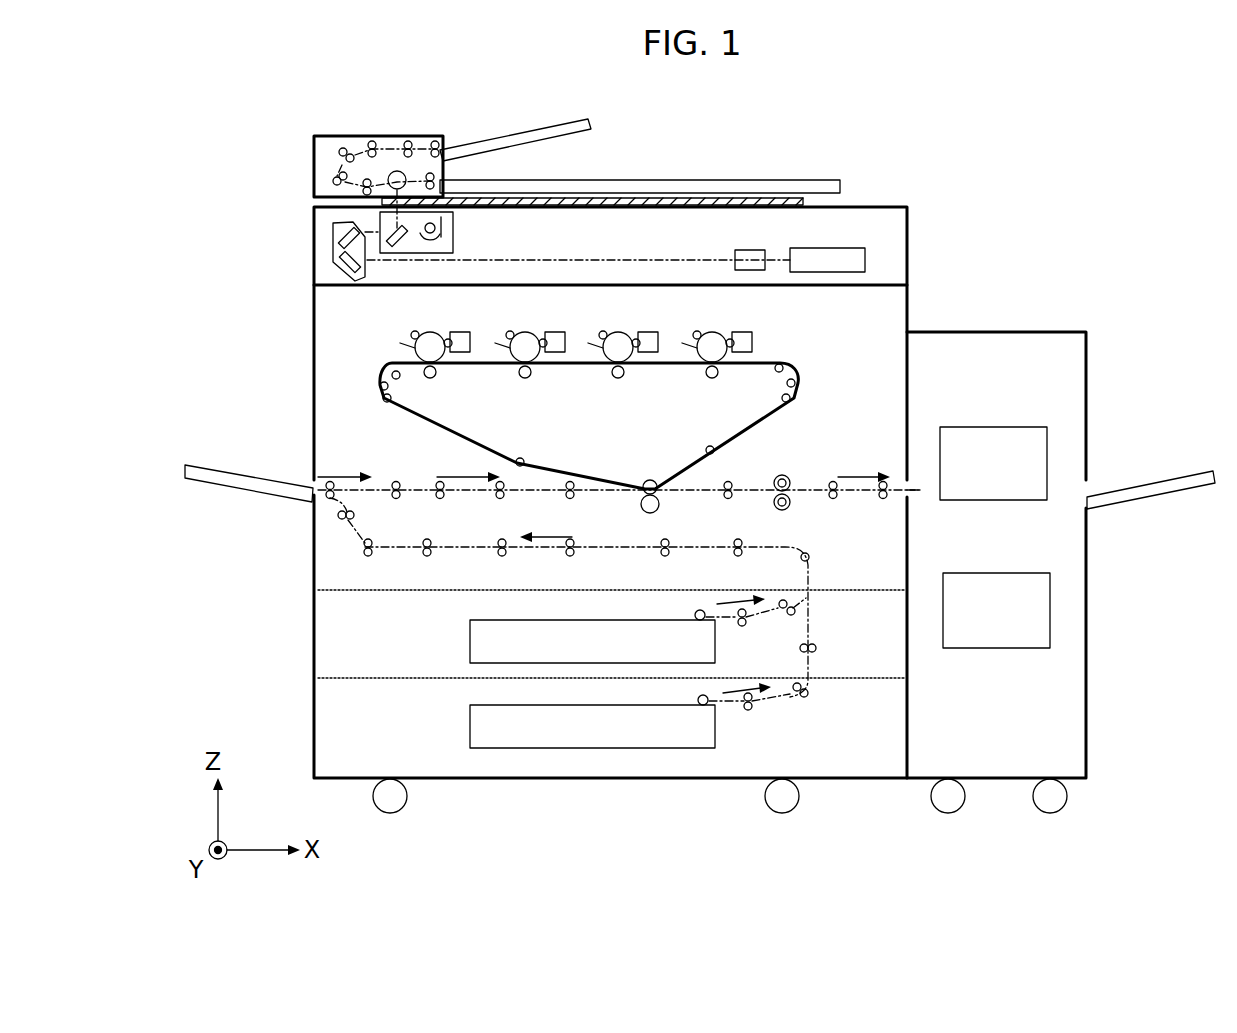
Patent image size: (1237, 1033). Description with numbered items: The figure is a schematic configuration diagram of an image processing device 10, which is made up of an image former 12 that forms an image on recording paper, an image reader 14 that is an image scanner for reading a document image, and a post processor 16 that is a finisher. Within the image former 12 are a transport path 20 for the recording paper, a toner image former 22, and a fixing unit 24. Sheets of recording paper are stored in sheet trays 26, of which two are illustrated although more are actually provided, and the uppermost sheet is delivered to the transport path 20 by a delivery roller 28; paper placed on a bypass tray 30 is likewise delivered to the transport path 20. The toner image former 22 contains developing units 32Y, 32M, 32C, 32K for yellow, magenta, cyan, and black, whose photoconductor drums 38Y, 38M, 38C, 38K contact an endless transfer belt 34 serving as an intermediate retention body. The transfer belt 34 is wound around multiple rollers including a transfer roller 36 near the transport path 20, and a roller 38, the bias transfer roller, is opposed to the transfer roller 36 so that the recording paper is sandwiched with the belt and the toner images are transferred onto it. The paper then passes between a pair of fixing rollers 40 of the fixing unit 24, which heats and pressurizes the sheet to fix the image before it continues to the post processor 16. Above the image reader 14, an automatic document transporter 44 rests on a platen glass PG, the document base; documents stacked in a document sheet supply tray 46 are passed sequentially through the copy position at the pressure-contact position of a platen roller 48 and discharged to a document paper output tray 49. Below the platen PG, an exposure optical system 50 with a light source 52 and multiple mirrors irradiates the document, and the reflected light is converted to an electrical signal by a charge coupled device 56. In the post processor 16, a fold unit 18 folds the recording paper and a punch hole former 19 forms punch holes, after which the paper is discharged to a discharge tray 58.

The image processing device 10 is at (1000, 199).
The image former 12 is at (884, 306).
The image reader 14 is at (885, 224).
The post processor 16 is at (974, 354).
The fold unit 18 is at (975, 427).
The punch hole former 19 is at (975, 573).
The transport path 20 is at (345, 525).
The toner image former 22 is at (345, 358).
The fixing unit 24 is at (803, 506).
The sheet tray 26 is at (578, 654).
The delivery roller 28 is at (695, 615).
The bypass tray 30 is at (205, 462).
The developing unit 32K is at (456, 324).
The developing unit 32C is at (560, 322).
The developing unit 32M is at (655, 322).
The developing unit 32Y is at (756, 322).
The transfer belt 34 is at (775, 412).
The transfer roller 36 is at (650, 478).
The roller 38 is at (660, 510).
The photoconductor drum 38K is at (427, 333).
The photoconductor drum 38C is at (522, 333).
The photoconductor drum 38M is at (617, 333).
The photoconductor drum 38Y is at (711, 333).
The fixing rollers 40 is at (790, 478).
The automatic document transporter 44 is at (313, 162).
The document sheet supply tray 46 is at (540, 130).
The platen roller 48 is at (396, 171).
The document paper output tray 49 is at (483, 183).
The exposure optical system 50 is at (380, 218).
The light source 52 is at (455, 228).
The charge coupled device 56 is at (822, 248).
The discharge tray 58 is at (1175, 471).
The platen glass PG is at (780, 195).